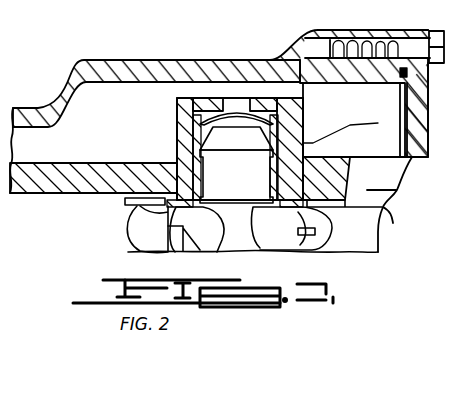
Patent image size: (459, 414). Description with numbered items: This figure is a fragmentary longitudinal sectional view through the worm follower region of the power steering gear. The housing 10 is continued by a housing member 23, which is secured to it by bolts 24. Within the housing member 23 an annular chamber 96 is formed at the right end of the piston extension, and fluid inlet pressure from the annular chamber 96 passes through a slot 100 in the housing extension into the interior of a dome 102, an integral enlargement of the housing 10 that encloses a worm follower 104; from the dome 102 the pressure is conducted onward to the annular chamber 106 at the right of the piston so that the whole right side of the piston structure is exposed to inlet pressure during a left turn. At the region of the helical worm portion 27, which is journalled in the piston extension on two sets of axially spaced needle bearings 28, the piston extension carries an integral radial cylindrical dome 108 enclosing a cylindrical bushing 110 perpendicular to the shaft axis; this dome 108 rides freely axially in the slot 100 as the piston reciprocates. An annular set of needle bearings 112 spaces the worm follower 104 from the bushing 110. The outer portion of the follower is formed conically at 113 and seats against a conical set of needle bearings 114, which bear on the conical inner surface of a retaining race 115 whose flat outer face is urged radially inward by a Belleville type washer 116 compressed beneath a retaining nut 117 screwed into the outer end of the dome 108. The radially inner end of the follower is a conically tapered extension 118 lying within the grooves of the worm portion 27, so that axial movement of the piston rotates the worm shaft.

The housing 10 is at (327, 29).
The housing member 23 is at (428, 113).
The bolts 24 is at (407, 50).
The helical worm portion 27 is at (193, 247).
The needle bearings 28 is at (133, 217).
The annular chamber 96 is at (372, 90).
The slot 100 is at (376, 119).
The dome 102 is at (152, 60).
The worm follower 104 is at (250, 177).
The annular chamber 106 is at (21, 139).
The radial cylindrical dome 108 is at (175, 103).
The cylindrical bushing 110 is at (178, 158).
The needle bearings 112 is at (338, 172).
The conical outer portion of follower 113 is at (297, 96).
The conical needle bearings 114 is at (200, 135).
The retaining race 115 is at (197, 119).
The Belleville type washer 116 is at (213, 100).
The retaining nut 117 is at (260, 100).
The conically tapered extension 118 is at (238, 222).